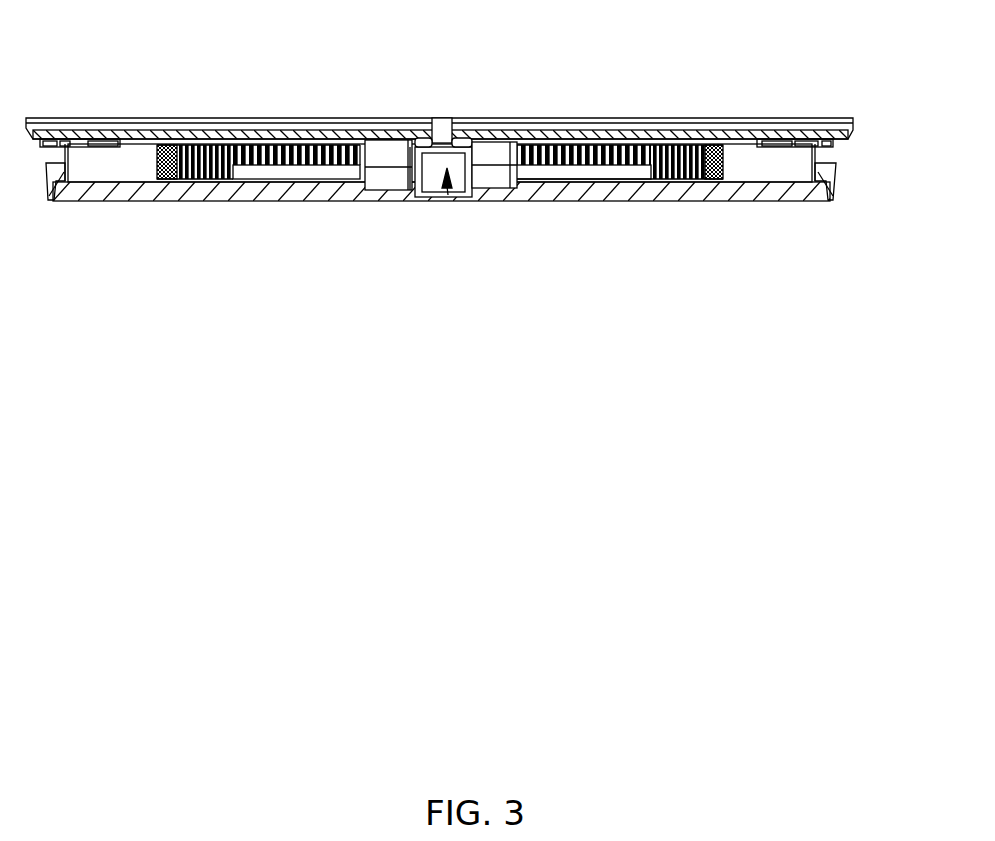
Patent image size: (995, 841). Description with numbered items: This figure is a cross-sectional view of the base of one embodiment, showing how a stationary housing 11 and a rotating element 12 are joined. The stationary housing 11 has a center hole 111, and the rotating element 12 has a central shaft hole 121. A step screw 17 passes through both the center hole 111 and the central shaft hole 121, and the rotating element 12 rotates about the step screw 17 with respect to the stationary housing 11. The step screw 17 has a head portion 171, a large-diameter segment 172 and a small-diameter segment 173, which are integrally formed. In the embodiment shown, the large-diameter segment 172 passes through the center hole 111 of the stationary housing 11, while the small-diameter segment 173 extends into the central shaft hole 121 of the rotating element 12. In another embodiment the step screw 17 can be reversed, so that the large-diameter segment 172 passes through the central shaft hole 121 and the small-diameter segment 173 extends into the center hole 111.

The stationary housing 11 is at (830, 188).
The center hole 111 is at (448, 195).
The rotating element 12 is at (828, 125).
The central shaft hole 121 is at (445, 98).
The step screw 17 is at (412, 238).
The head portion 171 is at (410, 142).
The large-diameter segment 172 is at (438, 148).
The small-diameter segment 173 is at (400, 140).